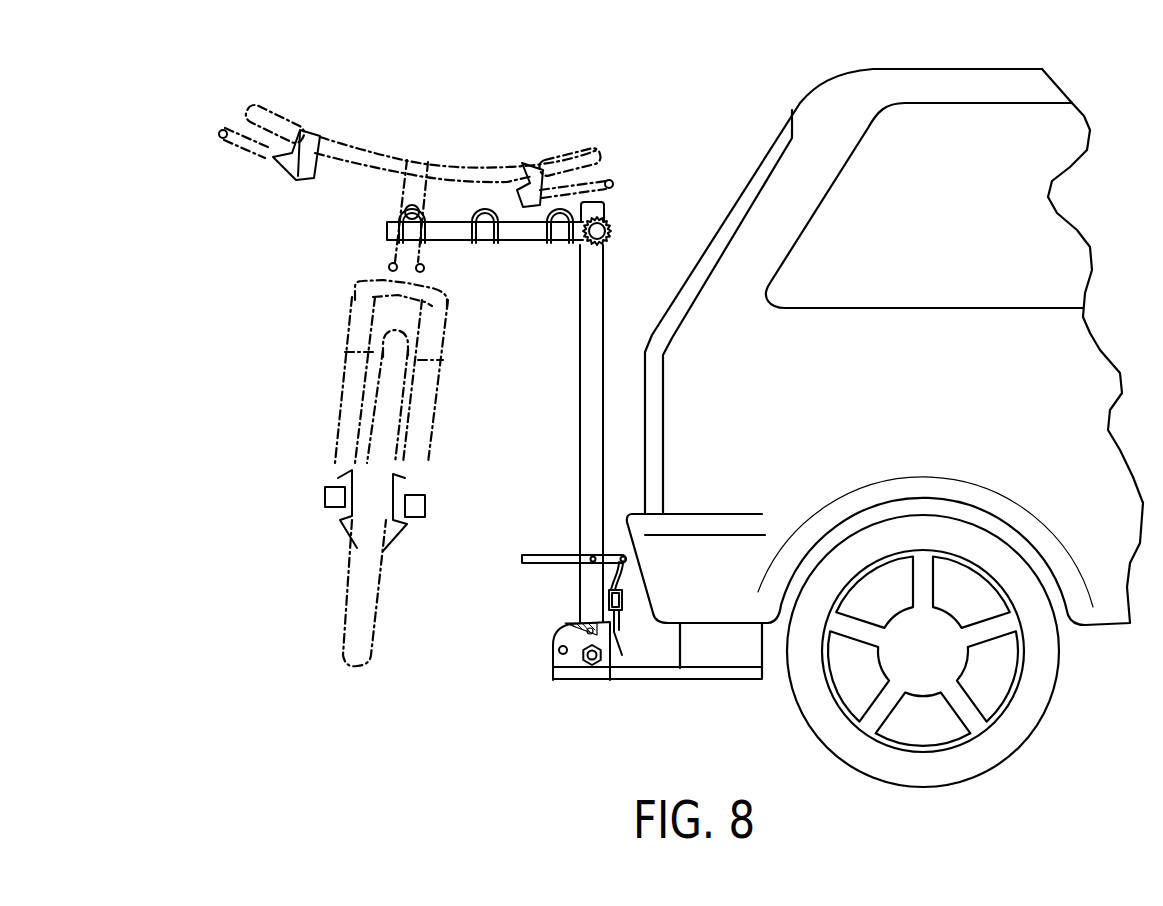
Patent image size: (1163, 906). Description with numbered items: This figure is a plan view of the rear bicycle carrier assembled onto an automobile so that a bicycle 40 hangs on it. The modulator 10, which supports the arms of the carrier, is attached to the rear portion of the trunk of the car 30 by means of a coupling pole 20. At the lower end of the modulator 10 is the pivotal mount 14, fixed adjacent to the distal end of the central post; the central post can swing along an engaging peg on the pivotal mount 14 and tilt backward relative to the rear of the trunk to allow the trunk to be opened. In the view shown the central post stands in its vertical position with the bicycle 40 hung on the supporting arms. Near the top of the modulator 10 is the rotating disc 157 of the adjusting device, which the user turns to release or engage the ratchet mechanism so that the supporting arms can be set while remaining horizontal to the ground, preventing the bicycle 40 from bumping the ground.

The modulator 10 is at (572, 411).
The pivotal mount 14 is at (562, 657).
The coupling pole 20 is at (663, 677).
The car 30 is at (840, 92).
The bicycle 40 is at (313, 296).
The rotating disc 157 is at (612, 216).